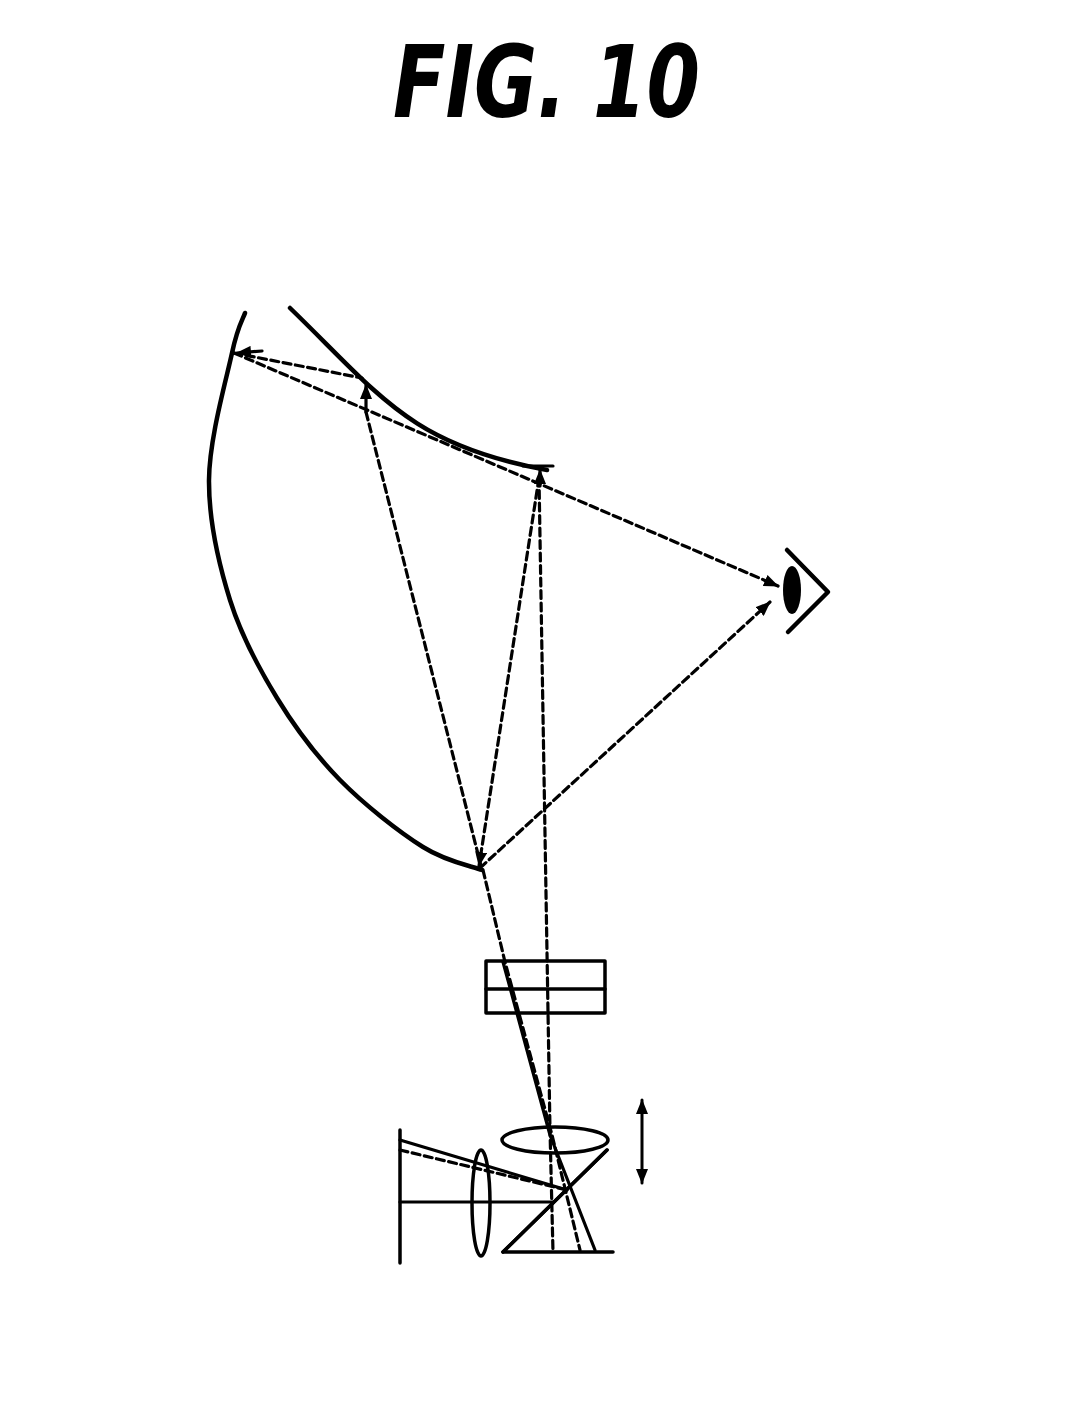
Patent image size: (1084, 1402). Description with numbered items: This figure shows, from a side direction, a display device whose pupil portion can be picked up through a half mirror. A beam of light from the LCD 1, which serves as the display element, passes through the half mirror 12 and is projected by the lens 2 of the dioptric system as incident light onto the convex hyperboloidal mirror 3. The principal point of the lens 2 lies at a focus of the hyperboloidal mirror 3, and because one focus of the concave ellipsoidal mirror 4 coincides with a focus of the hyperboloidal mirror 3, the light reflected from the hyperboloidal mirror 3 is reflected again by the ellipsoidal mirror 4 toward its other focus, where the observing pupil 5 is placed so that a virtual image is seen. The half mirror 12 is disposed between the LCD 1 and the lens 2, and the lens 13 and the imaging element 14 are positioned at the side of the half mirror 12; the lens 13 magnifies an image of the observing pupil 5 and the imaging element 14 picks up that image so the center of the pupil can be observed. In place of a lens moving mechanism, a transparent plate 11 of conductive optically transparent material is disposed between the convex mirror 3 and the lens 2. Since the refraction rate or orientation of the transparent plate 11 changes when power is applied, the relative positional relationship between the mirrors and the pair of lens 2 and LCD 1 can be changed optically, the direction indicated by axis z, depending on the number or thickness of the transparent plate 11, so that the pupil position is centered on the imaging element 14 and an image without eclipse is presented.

The LCD (liquid crystal display element) 1 is at (607, 1250).
The lens 2 is at (584, 1127).
The convex hyperboloidal mirror 3 is at (318, 336).
The concave ellipsoidal mirror 4 is at (230, 597).
The observing pupil 5 is at (785, 572).
The transparent plate 11 is at (607, 970).
The half mirror 12 is at (590, 1168).
The lens 13 is at (480, 1148).
The imaging element 14 is at (400, 1237).
The axis z is at (644, 1140).